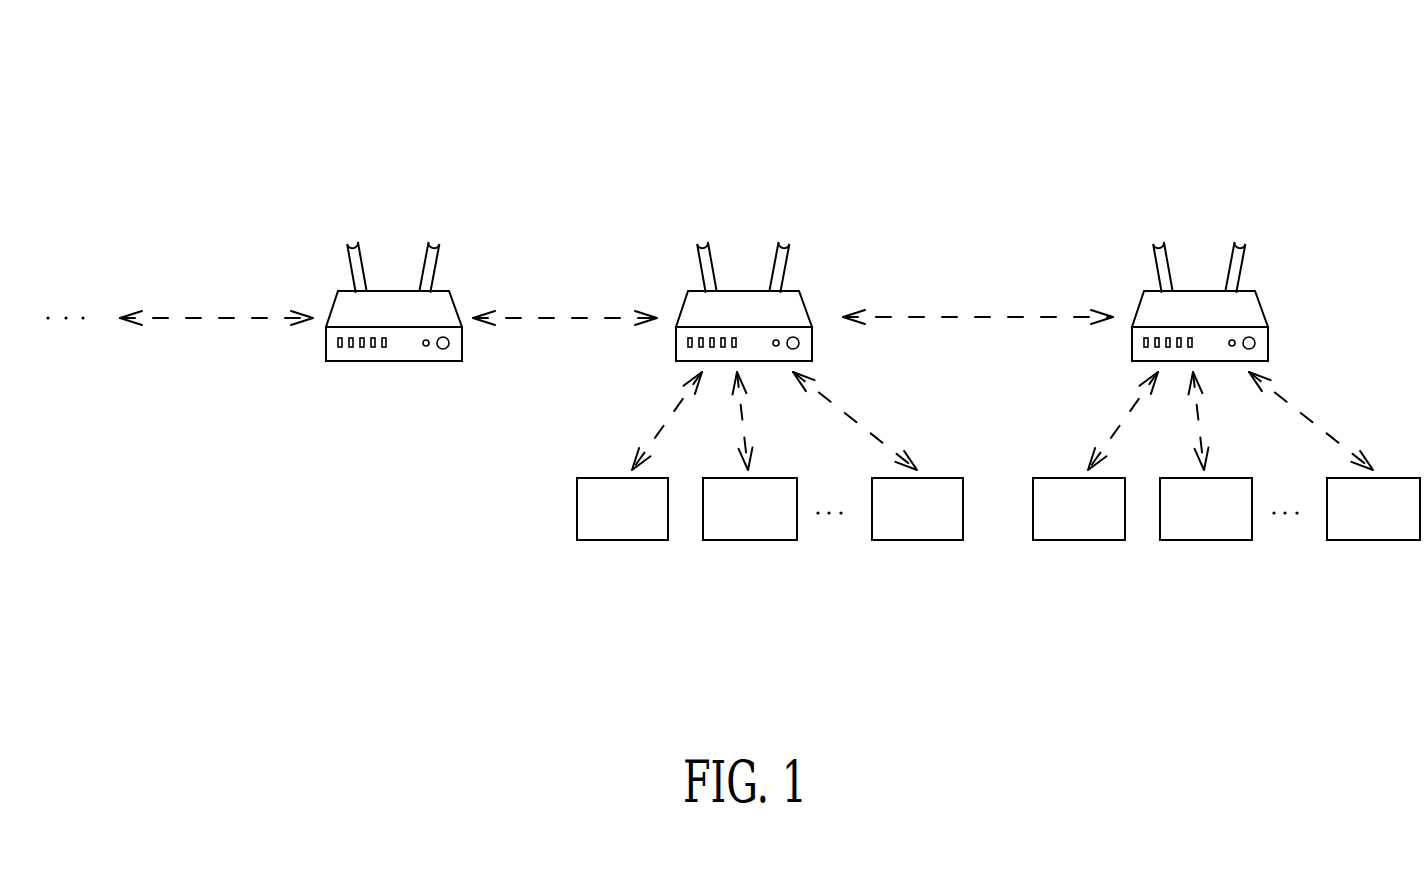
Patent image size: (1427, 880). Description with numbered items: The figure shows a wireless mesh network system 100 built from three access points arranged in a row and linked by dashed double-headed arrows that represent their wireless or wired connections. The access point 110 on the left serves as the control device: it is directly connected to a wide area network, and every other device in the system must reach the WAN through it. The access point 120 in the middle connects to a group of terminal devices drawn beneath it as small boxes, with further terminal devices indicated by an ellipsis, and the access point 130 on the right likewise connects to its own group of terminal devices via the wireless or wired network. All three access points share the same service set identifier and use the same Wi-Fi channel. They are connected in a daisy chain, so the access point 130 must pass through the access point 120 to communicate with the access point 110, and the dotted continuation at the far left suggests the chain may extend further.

The wireless mesh network system 100 is at (1068, 98).
The access point 110 is at (457, 302).
The access point 120 is at (782, 298).
The access point 130 is at (1238, 298).